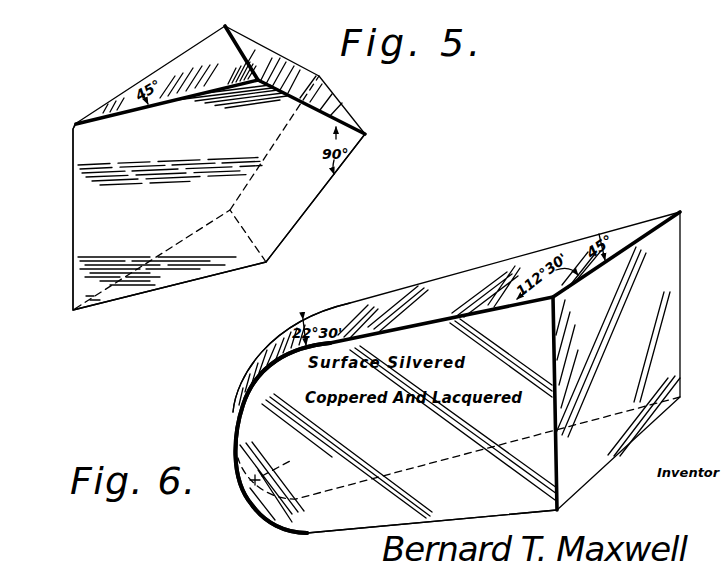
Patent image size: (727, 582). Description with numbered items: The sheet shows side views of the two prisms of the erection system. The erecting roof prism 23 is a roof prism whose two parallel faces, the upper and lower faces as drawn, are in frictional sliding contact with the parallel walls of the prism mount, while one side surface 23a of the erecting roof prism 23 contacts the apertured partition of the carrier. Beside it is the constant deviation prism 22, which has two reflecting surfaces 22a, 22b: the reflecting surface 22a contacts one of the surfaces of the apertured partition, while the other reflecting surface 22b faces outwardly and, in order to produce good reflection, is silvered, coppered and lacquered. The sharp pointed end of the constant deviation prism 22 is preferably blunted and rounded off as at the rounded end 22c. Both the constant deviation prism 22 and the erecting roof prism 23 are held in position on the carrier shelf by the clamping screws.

In FIG. 6, the constant deviation prism 22 is at (493, 256).
In FIG. 6, the reflecting surface 22a is at (621, 352).
In FIG. 6, the reflecting surface 22b is at (370, 505).
In FIG. 6, the blunted rounded end 22c is at (232, 400).
In FIG. 5, the erecting roof prism 23 is at (350, 118).
In FIG. 5, the side surface 23a is at (110, 207).